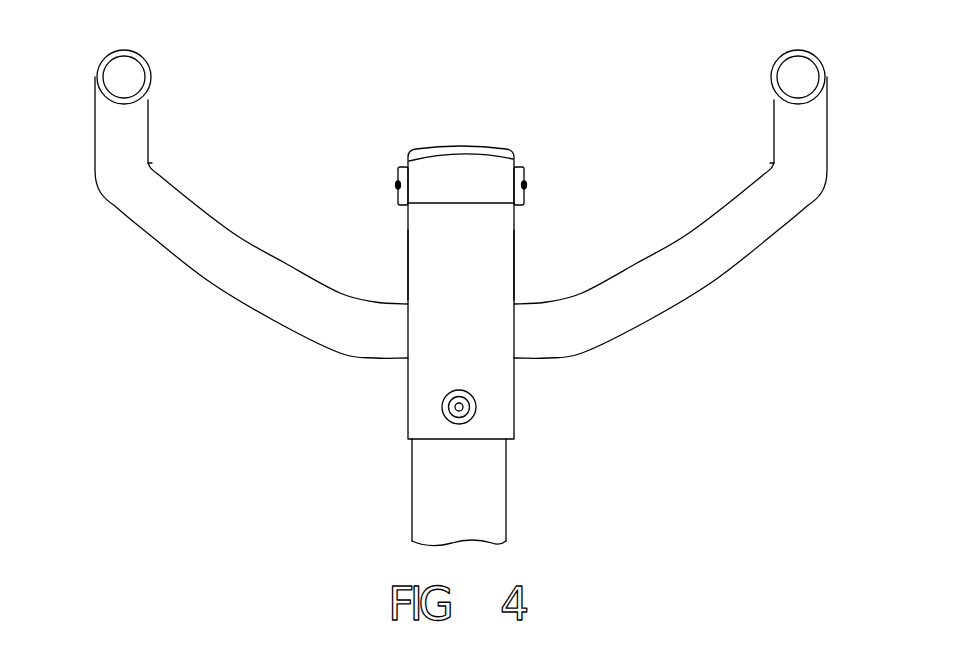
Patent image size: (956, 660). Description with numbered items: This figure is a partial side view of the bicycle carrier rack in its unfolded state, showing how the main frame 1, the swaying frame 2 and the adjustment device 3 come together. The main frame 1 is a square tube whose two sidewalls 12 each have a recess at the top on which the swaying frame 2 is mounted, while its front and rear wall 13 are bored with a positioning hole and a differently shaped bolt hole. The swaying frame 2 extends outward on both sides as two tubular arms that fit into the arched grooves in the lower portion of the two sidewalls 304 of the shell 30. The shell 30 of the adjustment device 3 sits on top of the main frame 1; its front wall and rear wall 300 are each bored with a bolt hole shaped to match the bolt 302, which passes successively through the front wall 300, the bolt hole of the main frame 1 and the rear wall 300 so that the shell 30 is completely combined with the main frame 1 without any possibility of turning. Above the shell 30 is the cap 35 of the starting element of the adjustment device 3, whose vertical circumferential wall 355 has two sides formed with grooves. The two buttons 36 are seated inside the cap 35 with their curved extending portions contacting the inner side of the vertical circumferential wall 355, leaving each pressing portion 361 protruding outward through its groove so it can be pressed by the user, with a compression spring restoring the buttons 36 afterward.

The main frame 1 is at (474, 493).
The sidewalls 12 is at (411, 480).
The front and rear wall 13 is at (435, 512).
The swaying frame 2 is at (233, 233).
The adjustment device 3 is at (460, 266).
The shell 30 is at (439, 326).
The front wall and rear wall 300 is at (437, 364).
The bolt 302 is at (452, 412).
The sidewalls 304 is at (406, 268).
The cap 35 is at (494, 143).
The vertical circumferential wall 355 is at (514, 158).
The buttons 36 is at (460, 163).
The pressing portion 361 is at (396, 185).